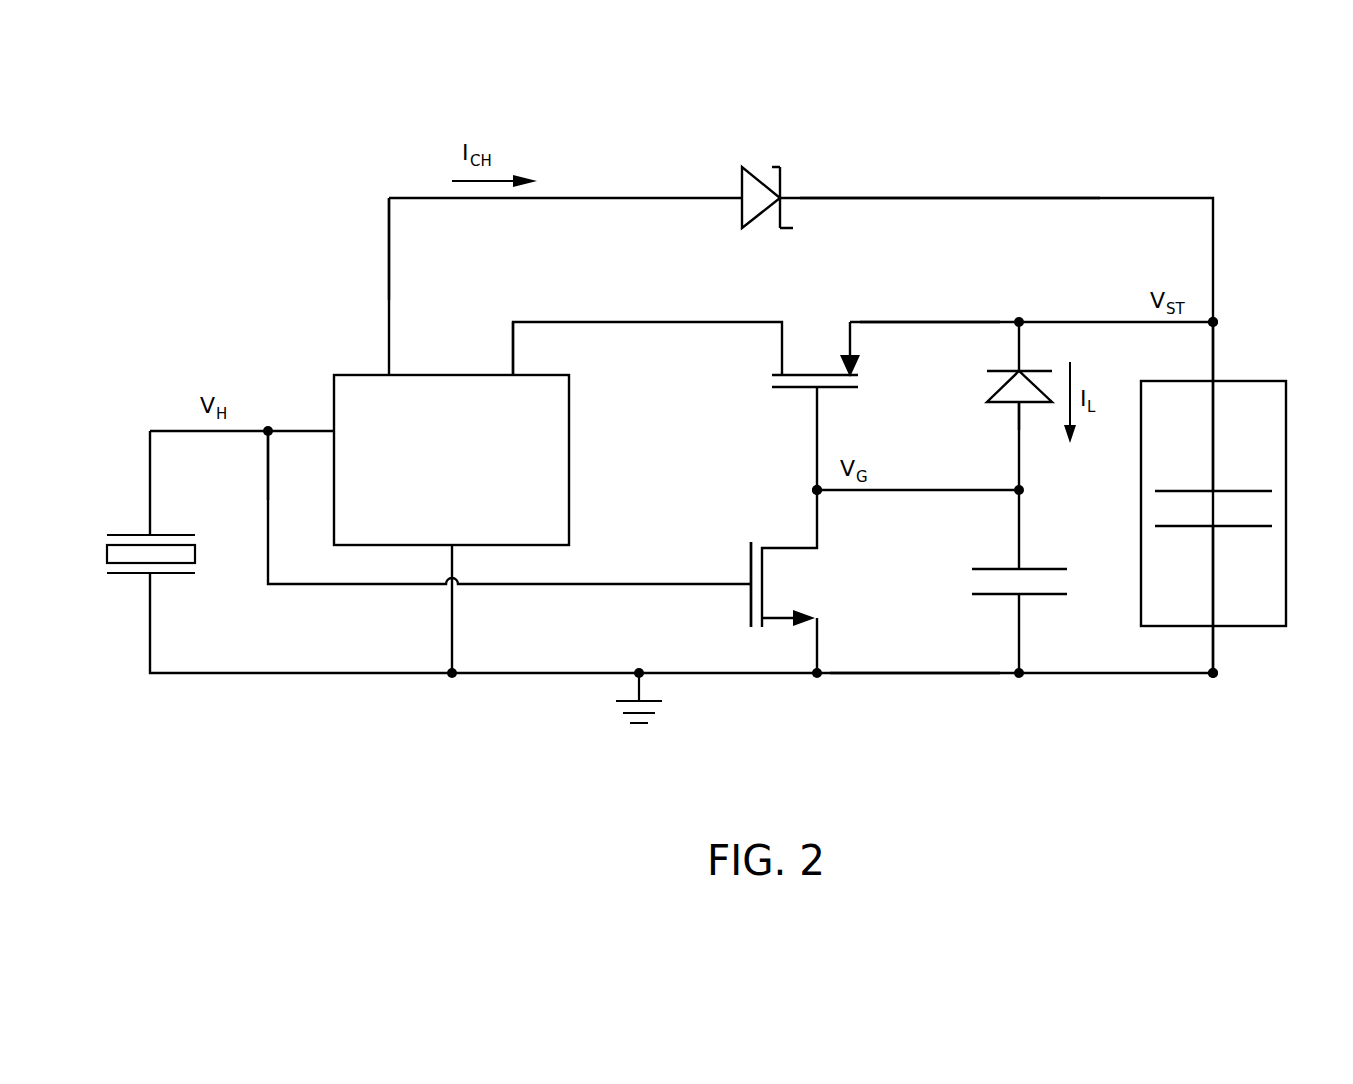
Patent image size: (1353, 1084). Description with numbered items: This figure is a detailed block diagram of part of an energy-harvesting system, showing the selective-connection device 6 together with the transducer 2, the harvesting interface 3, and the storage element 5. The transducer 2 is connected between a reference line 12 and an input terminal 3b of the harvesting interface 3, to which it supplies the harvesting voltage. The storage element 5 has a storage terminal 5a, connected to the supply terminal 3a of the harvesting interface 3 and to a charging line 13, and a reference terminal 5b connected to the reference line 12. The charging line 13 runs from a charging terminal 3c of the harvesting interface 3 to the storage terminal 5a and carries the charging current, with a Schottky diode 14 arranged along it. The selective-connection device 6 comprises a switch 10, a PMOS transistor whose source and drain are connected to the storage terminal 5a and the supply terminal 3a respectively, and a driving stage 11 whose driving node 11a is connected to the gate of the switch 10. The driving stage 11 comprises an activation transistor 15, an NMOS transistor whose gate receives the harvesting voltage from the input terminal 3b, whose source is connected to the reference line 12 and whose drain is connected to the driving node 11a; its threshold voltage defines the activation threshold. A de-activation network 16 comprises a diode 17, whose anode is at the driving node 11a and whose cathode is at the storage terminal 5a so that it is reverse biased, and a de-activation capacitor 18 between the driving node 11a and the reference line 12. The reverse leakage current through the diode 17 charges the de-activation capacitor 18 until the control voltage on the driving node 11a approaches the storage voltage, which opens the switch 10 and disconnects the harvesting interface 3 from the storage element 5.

The transducer 2 is at (106, 548).
The harvesting interface 3 is at (557, 521).
The supply terminal 3a is at (514, 343).
The input terminal 3b is at (268, 428).
The charging terminal 3c is at (388, 276).
The storage element 5 is at (1275, 435).
The storage terminal 5a is at (1218, 322).
The reference terminal 5b is at (1218, 673).
The selective-connection device 6 is at (925, 287).
The switch 10 is at (817, 373).
The driving stage 11 is at (783, 523).
The driving node 11a is at (812, 490).
The reference line 12 is at (900, 676).
The charging line 13 is at (932, 197).
The Schottky diode 14 is at (746, 184).
The activation transistor 15 is at (764, 584).
The de-activation network 16 is at (1082, 494).
The diode 17 is at (1010, 393).
The de-activation capacitor 18 is at (978, 595).